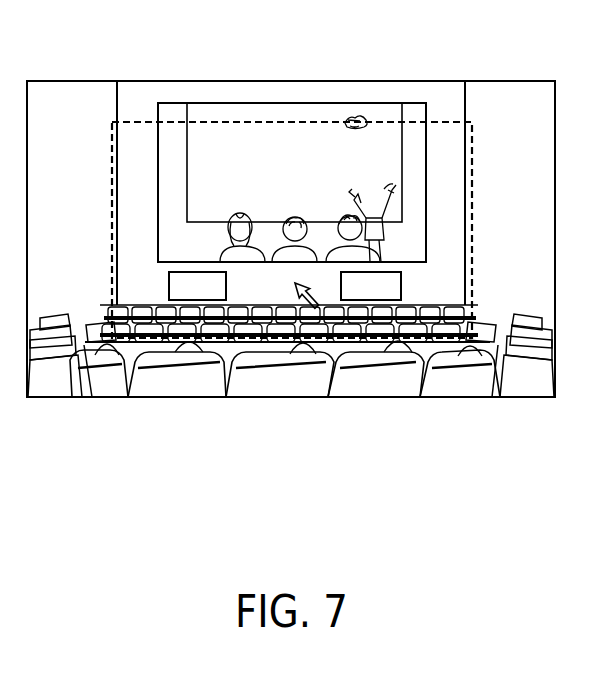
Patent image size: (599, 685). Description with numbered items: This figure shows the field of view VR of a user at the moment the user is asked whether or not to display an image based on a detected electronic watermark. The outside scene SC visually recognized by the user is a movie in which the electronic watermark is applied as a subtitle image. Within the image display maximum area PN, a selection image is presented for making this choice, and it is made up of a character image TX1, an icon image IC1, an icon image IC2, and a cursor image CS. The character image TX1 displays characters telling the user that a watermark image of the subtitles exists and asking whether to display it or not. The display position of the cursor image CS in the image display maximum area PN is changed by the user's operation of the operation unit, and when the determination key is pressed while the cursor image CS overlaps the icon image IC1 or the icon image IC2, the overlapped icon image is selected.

The outside scene SC is at (72, 133).
The image display maximum area PN is at (142, 121).
The field of view VR is at (465, 82).
The character image TX1 is at (292, 125).
The icon image IC1 is at (196, 300).
The icon image IC2 is at (371, 300).
The cursor image CS is at (316, 306).